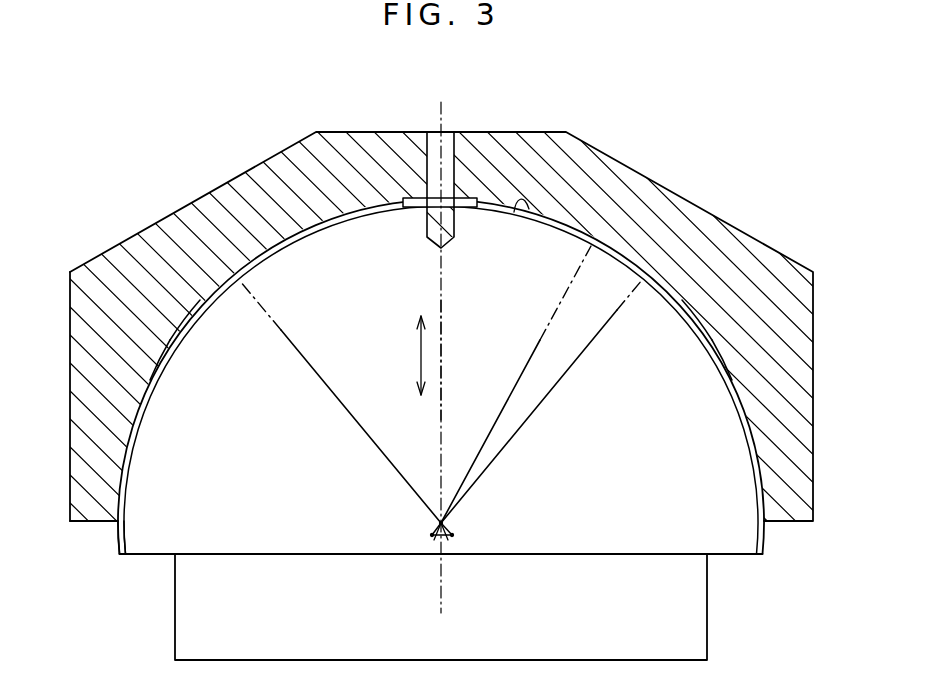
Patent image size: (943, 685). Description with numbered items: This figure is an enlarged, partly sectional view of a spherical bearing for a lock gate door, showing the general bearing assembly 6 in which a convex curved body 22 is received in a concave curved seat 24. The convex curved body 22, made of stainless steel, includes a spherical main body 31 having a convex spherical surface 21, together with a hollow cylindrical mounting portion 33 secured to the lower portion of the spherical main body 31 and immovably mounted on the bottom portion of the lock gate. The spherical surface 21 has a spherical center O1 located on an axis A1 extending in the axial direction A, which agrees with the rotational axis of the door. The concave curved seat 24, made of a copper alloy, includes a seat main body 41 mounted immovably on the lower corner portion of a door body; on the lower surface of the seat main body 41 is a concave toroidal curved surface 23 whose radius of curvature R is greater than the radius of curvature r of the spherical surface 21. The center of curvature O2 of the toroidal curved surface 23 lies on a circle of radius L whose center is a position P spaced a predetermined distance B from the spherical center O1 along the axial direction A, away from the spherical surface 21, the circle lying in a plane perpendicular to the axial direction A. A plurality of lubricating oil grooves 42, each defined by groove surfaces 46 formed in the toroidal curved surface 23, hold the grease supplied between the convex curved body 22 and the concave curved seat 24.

The housing cover 6 is at (312, 131).
The concave curved seat 24 is at (148, 235).
The seat main body 41 is at (72, 326).
The concave toroidal curved surface 23 is at (301, 231).
The convex spherical surface 21 is at (528, 213).
The lubricating oil grooves 42 is at (188, 322).
The groove surfaces 46 is at (165, 352).
The convex curved body 22 is at (130, 538).
The spherical main body 31 is at (752, 542).
The hollow cylindrical mounting portion 33 is at (707, 618).
The radius of curvature of toroidal curved surface R is at (345, 408).
The radius of curvature of spherical surface r is at (536, 342).
The axial direction A is at (420, 358).
The axis A1 is at (442, 358).
The predetermined distance B is at (450, 518).
The spherical center O1 is at (433, 518).
The center of curvature O2 is at (430, 534).
The radius of circle L is at (437, 541).
The position P is at (447, 541).